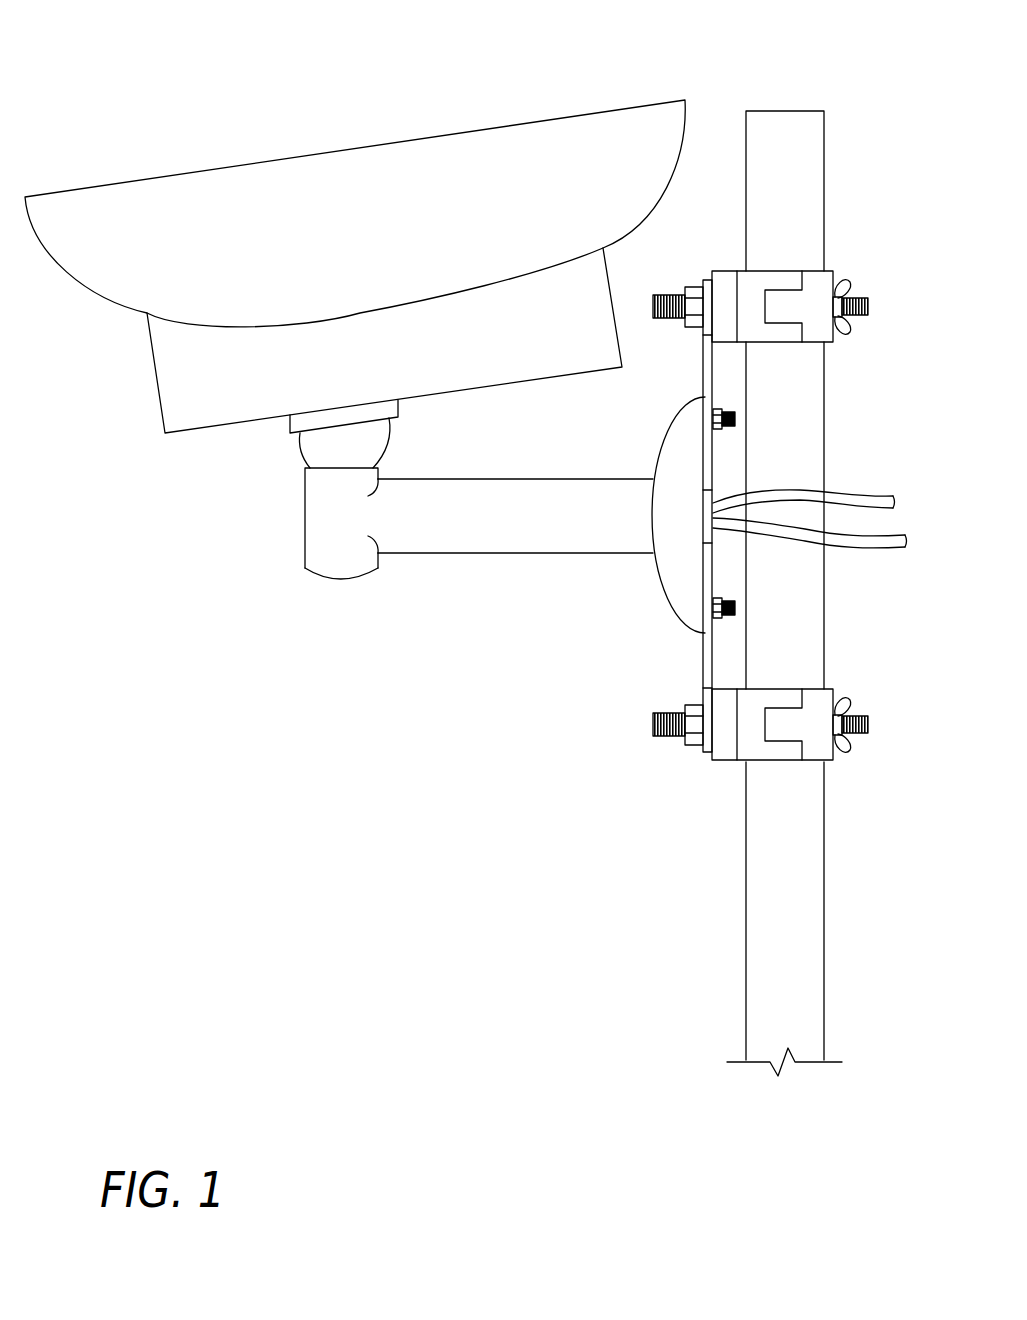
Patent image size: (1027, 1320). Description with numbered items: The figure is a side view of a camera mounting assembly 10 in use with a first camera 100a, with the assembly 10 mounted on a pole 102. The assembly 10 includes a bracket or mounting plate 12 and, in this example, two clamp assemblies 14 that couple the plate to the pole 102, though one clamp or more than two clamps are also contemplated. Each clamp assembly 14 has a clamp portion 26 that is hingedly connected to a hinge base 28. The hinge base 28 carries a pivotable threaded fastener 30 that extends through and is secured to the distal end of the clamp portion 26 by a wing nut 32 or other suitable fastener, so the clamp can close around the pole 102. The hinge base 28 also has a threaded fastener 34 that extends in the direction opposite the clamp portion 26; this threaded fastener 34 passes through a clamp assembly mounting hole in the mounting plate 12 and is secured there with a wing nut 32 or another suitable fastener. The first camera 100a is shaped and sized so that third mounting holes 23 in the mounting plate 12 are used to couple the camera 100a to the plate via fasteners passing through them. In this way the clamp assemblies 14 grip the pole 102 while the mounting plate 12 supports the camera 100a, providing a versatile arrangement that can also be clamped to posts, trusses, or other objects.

The first camera 100a is at (146, 131).
The pole 102 is at (812, 133).
The camera mounting assembly 10 is at (728, 255).
The mounting plate 12 is at (713, 463).
The clamp assembly 14 is at (775, 517).
The third mounting holes 23 is at (713, 412).
The clamp portion 26 is at (820, 322).
The hinge base 28 is at (723, 284).
The pivotable threaded fastener 30 is at (868, 307).
The wing nut 32 is at (845, 283).
The threaded fastener 34 is at (658, 320).